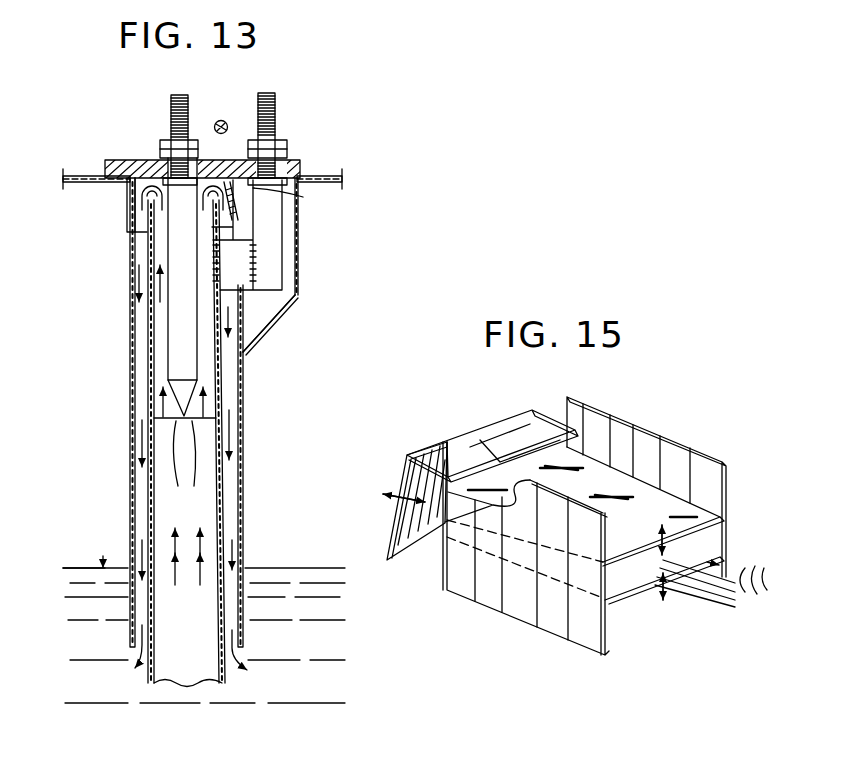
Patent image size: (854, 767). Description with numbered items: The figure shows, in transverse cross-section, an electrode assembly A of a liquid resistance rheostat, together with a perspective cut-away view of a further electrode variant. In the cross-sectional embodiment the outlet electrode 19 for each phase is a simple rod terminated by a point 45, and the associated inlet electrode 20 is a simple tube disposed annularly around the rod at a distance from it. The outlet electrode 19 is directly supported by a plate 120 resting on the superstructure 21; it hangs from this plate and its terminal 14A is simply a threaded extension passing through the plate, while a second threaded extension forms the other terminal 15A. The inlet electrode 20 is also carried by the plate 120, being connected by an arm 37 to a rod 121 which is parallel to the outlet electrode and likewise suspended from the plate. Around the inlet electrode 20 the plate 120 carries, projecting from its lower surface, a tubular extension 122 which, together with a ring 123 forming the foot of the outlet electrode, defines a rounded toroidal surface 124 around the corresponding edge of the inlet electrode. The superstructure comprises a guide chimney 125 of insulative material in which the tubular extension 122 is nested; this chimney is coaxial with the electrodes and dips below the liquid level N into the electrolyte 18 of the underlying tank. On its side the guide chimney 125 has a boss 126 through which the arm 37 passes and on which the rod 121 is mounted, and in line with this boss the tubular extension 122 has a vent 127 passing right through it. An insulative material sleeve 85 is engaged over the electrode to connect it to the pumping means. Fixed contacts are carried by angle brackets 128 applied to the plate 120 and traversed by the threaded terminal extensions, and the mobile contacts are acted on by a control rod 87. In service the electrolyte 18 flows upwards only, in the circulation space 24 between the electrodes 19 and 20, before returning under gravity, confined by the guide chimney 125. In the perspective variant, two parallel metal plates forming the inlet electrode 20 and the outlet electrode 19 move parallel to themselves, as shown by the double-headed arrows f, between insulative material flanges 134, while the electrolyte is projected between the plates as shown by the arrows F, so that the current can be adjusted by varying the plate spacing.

In FIG. 13, the pump assembly A is at (80, 132).
In FIG. 13, the terminal 14A is at (162, 126).
In FIG. 13, the stud bolt 15A is at (280, 120).
In FIG. 13, the control rod 87 is at (221, 118).
In FIG. 13, the angle bracket 128 is at (166, 142).
In FIG. 13, the ring 123 is at (139, 155).
In FIG. 13, the rounded toroidal surface 124 is at (229, 153).
In FIG. 13, the plate 120 is at (312, 163).
In FIG. 13, the superstructure 21 is at (73, 178).
In FIG. 13, the tubular extension 122 is at (135, 200).
In FIG. 13, the vent 127 is at (297, 200).
In FIG. 13, the outlet electrode 19 is at (166, 253).
In FIG. 15, the outlet electrode 19 is at (637, 582).
In FIG. 13, the inlet electrode 20 is at (148, 268).
In FIG. 15, the inlet electrode 20 is at (657, 497).
In FIG. 13, the rod 121 is at (272, 241).
In FIG. 13, the circulation space 24 is at (158, 292).
In FIG. 13, the boss 126 is at (287, 300).
In FIG. 13, the arm 37 is at (243, 292).
In FIG. 13, the point 45 is at (182, 402).
In FIG. 13, the guide chimney 125 is at (122, 448).
In FIG. 13, the liquid level N is at (84, 552).
In FIG. 13, the electrolyte 18 is at (288, 583).
In FIG. 13, the insulative material sleeve 85 is at (160, 664).
In FIG. 15, the insulative material flanges 134 is at (727, 507).
In FIG. 15, the arrows F is at (711, 575).
In FIG. 15, the double-headed arrows f is at (405, 494).